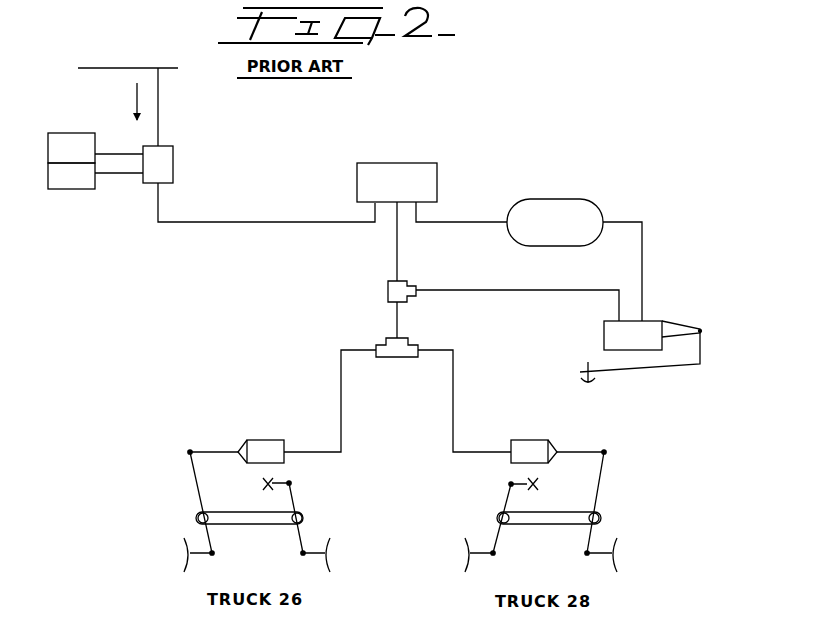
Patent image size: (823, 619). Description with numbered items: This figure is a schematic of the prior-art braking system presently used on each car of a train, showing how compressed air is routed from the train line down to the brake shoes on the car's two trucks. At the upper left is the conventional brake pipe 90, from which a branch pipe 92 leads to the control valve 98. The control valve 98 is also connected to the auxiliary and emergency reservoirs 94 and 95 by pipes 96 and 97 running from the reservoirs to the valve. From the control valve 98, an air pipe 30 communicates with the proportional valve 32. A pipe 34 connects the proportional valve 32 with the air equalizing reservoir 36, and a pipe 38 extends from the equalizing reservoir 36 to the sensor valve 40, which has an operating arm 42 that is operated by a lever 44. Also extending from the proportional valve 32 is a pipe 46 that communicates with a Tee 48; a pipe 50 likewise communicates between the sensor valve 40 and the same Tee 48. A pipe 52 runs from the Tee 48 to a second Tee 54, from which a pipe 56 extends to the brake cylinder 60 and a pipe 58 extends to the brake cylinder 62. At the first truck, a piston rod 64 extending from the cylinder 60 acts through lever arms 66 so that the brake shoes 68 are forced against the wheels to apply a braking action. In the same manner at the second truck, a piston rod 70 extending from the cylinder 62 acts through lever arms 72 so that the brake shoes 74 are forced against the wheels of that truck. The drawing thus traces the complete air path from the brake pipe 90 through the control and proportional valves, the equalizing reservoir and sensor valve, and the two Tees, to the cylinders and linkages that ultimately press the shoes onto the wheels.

The air pipe 30 is at (227, 222).
The proportional valve 32 is at (383, 173).
The pipe 34 is at (465, 222).
The air equalizing reservoir 36 is at (562, 208).
The pipe 38 is at (645, 265).
The sensor valve 40 is at (648, 330).
The operating arm 42 is at (680, 328).
The lever 44 is at (648, 370).
The pipe 46 is at (395, 237).
The Tee 48 is at (388, 290).
The pipe 50 is at (492, 292).
The pipe 52 is at (398, 322).
The Tee 54 is at (395, 352).
The pipe 56 is at (341, 393).
The pipe 58 is at (457, 398).
The brake cylinder 60 is at (268, 448).
The brake cylinder 62 is at (525, 448).
The piston rod 64 is at (207, 452).
The lever arms 66 is at (197, 497).
The brake shoes 68 is at (183, 549).
The piston rod 70 is at (575, 452).
The lever arms 72 is at (503, 497).
The brake shoes 74 is at (468, 545).
The brake pipe 90 is at (113, 67).
The branch pipe 92 is at (160, 118).
The auxiliary reservoir 94 is at (73, 140).
The emergency reservoir 95 is at (70, 184).
The pipe 96 is at (118, 152).
The pipe 97 is at (118, 173).
The control valve 98 is at (173, 172).